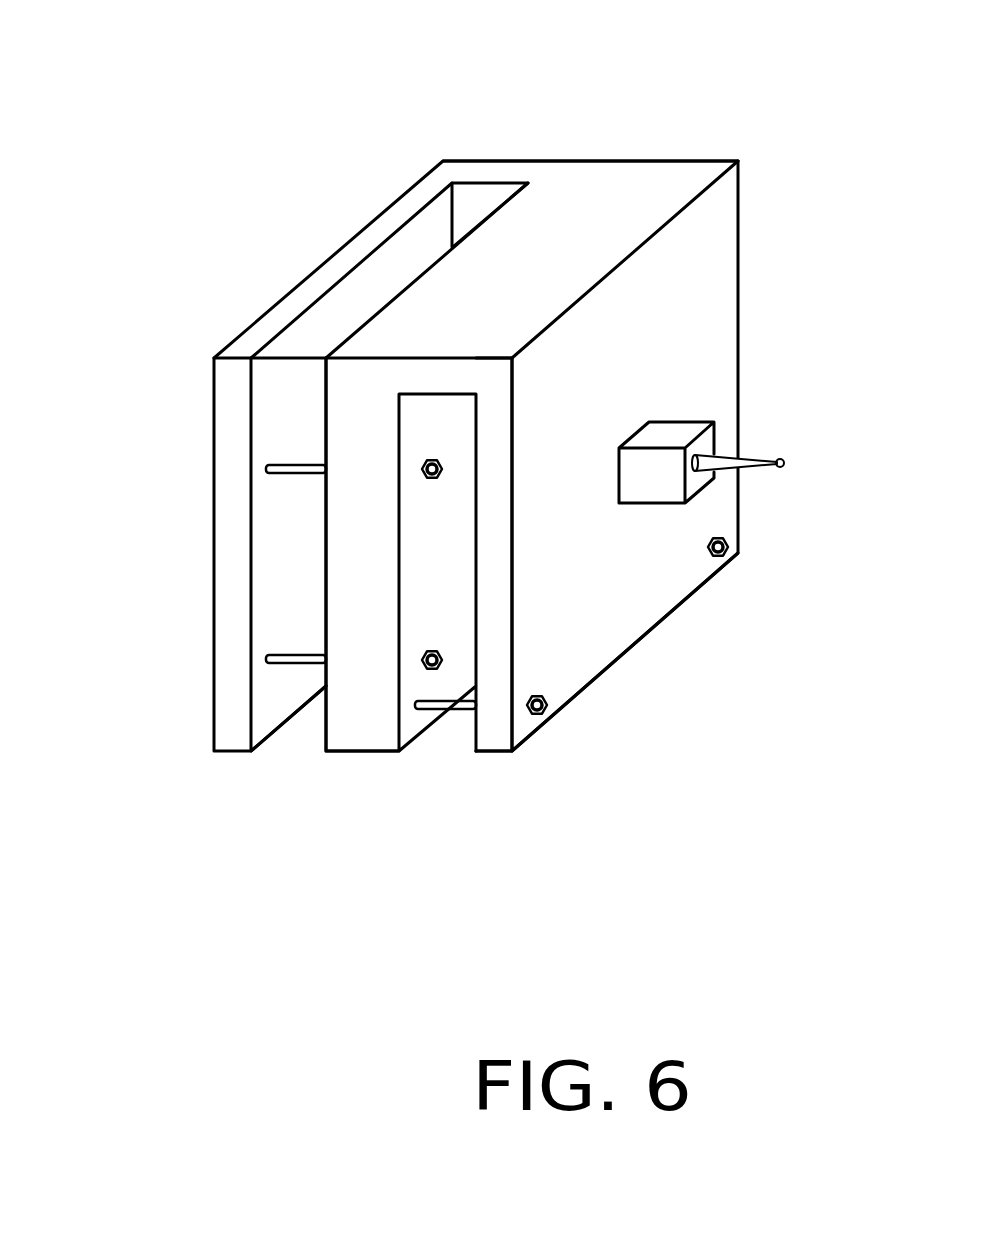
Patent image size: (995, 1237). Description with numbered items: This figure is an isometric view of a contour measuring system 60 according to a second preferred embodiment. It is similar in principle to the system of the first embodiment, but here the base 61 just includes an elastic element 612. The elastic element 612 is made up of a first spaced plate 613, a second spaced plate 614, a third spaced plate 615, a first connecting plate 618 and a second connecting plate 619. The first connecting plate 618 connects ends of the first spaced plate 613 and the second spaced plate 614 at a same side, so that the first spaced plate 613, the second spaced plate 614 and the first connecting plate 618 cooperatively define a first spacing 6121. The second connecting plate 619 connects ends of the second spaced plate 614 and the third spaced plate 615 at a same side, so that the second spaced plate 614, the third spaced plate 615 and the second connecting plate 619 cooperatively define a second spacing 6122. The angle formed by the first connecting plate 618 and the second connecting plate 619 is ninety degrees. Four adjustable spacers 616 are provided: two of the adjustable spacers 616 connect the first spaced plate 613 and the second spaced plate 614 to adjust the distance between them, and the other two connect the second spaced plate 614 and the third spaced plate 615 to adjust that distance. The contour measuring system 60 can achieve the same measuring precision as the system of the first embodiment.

The contour measuring system 60 is at (440, 448).
The base 61 is at (440, 458).
The elastic element 612 is at (460, 458).
The first spacing 6121 is at (445, 770).
The second spacing 6122 is at (275, 404).
The first spaced plate 613 is at (498, 550).
The second spaced plate 614 is at (370, 675).
The third spaced plate 615 is at (233, 673).
The adjustable spacers 616 is at (300, 659).
The first connecting plate 618 is at (578, 220).
The second connecting plate 619 is at (486, 172).